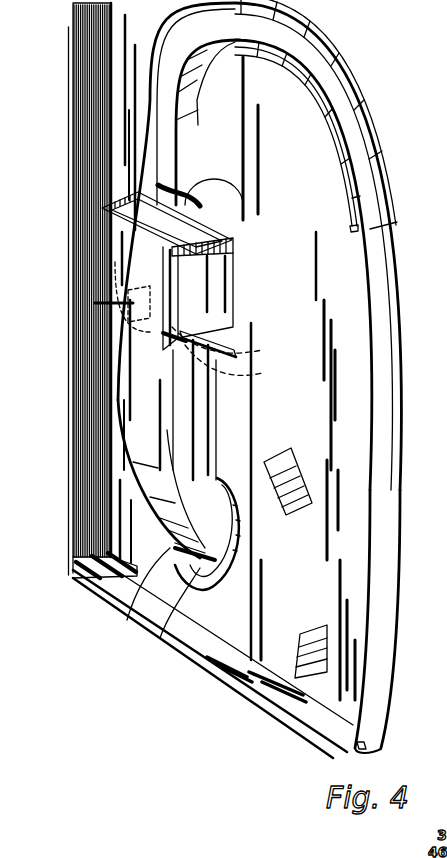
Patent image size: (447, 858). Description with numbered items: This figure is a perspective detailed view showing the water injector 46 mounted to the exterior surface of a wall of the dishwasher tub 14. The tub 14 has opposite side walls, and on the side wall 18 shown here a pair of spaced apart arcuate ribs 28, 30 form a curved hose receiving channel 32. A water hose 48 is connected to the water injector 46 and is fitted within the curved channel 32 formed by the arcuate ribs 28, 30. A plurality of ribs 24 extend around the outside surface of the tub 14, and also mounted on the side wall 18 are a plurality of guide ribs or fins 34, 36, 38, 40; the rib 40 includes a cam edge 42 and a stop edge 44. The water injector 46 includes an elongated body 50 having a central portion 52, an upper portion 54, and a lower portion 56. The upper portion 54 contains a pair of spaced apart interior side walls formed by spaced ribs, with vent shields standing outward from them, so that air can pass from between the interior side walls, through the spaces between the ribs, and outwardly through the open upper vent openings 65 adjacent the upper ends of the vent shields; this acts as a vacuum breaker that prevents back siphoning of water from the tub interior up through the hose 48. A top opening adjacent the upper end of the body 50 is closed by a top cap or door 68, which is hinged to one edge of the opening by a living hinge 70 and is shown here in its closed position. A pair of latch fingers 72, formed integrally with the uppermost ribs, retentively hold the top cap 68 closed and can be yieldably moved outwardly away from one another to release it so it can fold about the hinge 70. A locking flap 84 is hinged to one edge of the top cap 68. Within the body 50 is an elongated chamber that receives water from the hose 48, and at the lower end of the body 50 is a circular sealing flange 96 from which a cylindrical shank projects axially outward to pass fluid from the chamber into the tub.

The tub 14 is at (347, 353).
The side wall 18 is at (354, 369).
The ribs 24 is at (160, 608).
The arcuate rib 28 is at (311, 41).
The arcuate rib 30 is at (320, 55).
The hose receiving channel 32 is at (325, 71).
The guide rib 34 is at (286, 522).
The guide rib 36 is at (300, 628).
The guide rib 38 is at (115, 330).
The guide rib 40 is at (238, 342).
The cam edge 42 is at (236, 346).
The stop edge 44 is at (215, 371).
The water injector 46 is at (226, 409).
The water hose 48 is at (384, 385).
The elongated body 50 is at (224, 431).
The central portion 52 is at (225, 396).
The upper portion 54 is at (232, 276).
The lower portion 56 is at (143, 605).
The upper vent openings 65 is at (73, 194).
The top cap 68 is at (261, 205).
The living hinge 70 is at (73, 246).
The latch fingers 72 is at (247, 217).
The locking flap 84 is at (246, 188).
The circular sealing flange 96 is at (159, 637).